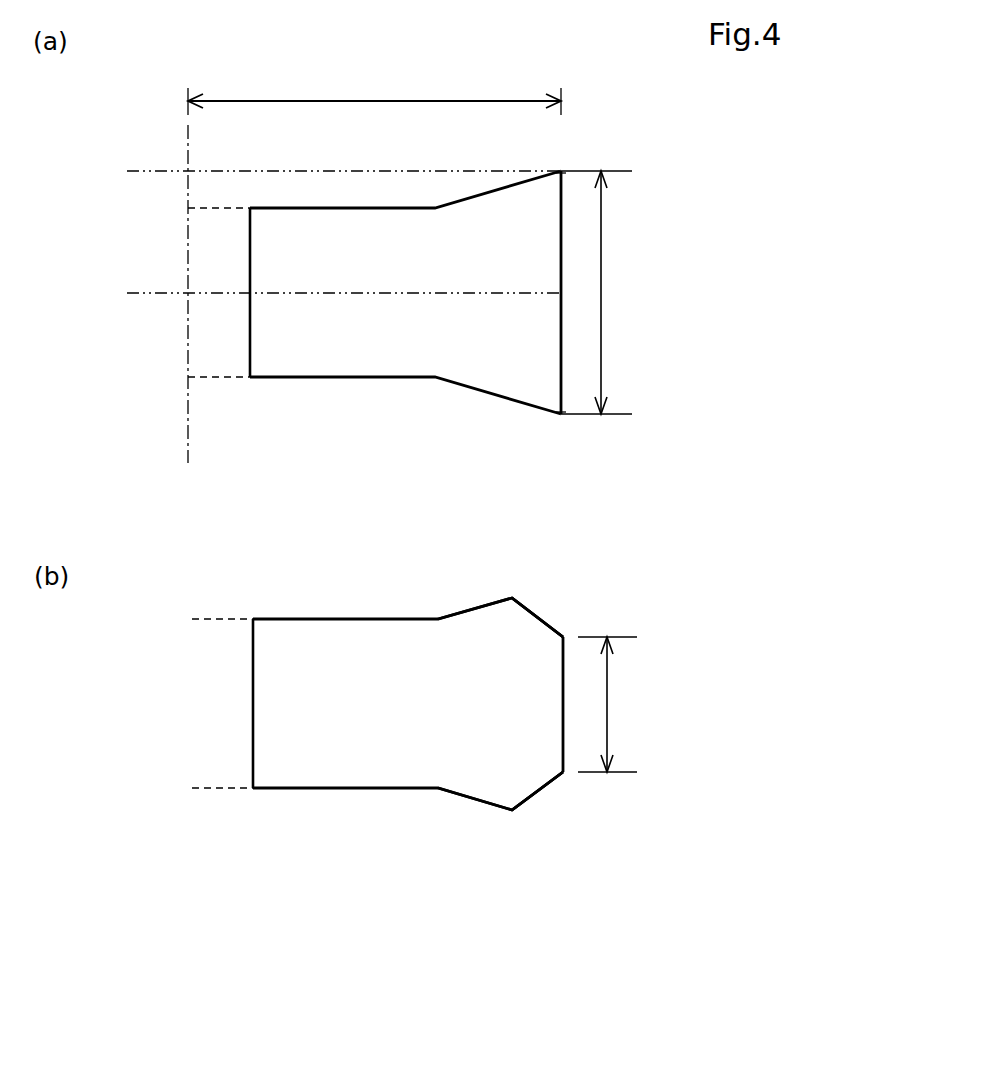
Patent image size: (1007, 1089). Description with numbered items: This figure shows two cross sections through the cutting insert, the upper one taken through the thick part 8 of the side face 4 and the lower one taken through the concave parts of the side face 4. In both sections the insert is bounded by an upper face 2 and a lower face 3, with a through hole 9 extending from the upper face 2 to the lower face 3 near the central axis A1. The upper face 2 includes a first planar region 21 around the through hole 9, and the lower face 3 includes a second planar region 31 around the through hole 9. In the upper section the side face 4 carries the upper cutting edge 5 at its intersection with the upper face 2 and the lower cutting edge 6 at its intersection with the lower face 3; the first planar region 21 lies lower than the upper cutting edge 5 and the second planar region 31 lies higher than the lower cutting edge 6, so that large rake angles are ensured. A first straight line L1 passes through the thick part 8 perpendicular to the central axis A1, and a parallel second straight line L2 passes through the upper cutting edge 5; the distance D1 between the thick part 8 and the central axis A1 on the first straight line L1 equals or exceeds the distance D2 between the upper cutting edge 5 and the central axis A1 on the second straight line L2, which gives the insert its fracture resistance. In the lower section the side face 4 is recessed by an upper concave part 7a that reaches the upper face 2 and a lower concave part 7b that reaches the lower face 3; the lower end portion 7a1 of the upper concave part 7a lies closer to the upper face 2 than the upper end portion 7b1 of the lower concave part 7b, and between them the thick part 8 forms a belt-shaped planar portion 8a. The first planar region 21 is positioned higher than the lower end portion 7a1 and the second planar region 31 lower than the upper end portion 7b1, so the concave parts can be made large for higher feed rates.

The upper face 2 is at (406, 378).
The first planar region 21 is at (370, 207).
The lower face 3 is at (406, 630).
The second planar region 31 is at (368, 378).
The side face 4 is at (563, 346).
The upper cutting edge 5 is at (561, 171).
The lower cutting edge 6 is at (561, 416).
The thick part 8 is at (596, 292).
The through hole 9 is at (218, 377).
The upper concave part 7a is at (539, 612).
The lower end portion 7a1 is at (565, 632).
The lower concave part 7b is at (538, 793).
The upper end portion 7b1 is at (567, 775).
The planar portion 8a is at (611, 704).
The first straight line L1 is at (128, 295).
The second straight line L2 is at (131, 171).
The central axis A1 is at (188, 440).
The distance between the thick part and the central axis D1 is at (374, 90).
The distance between the upper cutting edge and the central axis D2 is at (374, 90).